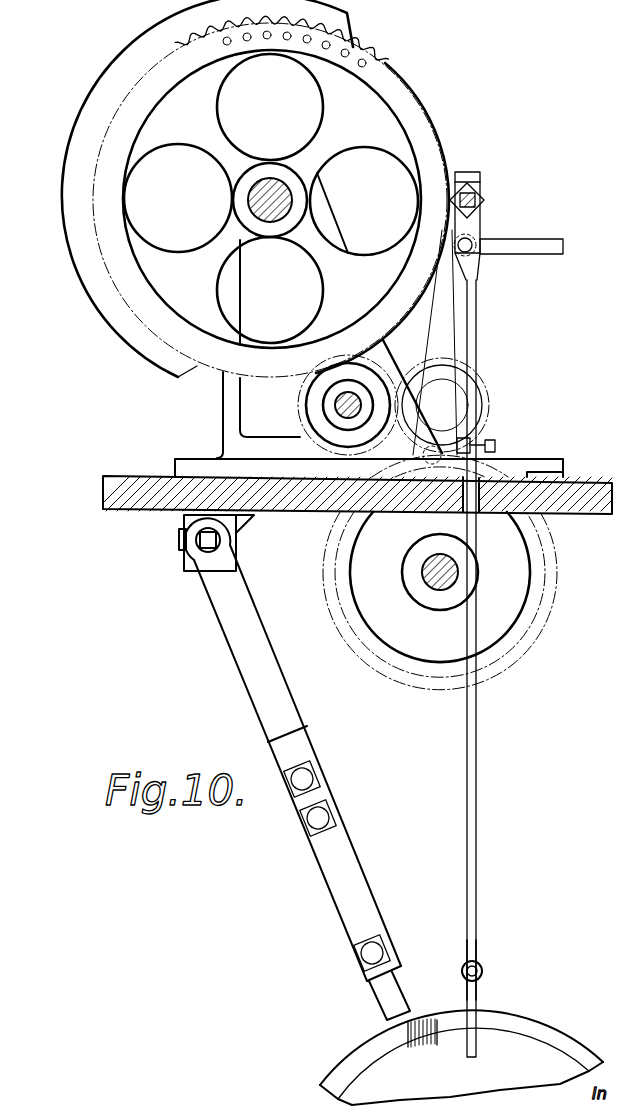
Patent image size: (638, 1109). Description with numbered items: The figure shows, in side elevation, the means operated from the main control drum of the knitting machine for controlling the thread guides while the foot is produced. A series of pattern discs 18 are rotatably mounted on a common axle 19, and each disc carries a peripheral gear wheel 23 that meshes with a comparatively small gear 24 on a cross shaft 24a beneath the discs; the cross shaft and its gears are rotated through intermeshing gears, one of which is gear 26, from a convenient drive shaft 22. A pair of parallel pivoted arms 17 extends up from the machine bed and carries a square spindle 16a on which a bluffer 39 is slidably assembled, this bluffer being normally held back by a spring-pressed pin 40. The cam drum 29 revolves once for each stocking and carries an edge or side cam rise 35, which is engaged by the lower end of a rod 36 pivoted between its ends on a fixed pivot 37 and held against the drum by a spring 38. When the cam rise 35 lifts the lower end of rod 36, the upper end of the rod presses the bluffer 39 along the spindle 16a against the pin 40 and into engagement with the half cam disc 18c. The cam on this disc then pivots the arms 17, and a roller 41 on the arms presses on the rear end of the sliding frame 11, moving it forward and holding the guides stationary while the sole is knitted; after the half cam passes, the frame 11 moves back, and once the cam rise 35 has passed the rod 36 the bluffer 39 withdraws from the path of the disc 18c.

The pattern disc 18 is at (76, 160).
The half cam disc 18c is at (414, 90).
The peripheral gear wheel 23 is at (298, 26).
The common axle 19 is at (272, 178).
The square spindle 16a is at (462, 172).
The spring-pressed pin 40 is at (481, 183).
The bluffer 39 is at (484, 203).
The roller 41 is at (458, 255).
The sliding frame 11 is at (519, 250).
The parallel arms 17 is at (441, 341).
The small gear 24 is at (300, 398).
The cross shaft 24a is at (342, 418).
The fixed pivot 37 is at (487, 443).
The drive shaft 22 is at (444, 584).
The intermeshing gear 26 is at (535, 637).
The rod 36 is at (473, 950).
The spring 38 is at (482, 975).
The cam rise 35 is at (433, 990).
The cam drum 29 is at (540, 1030).